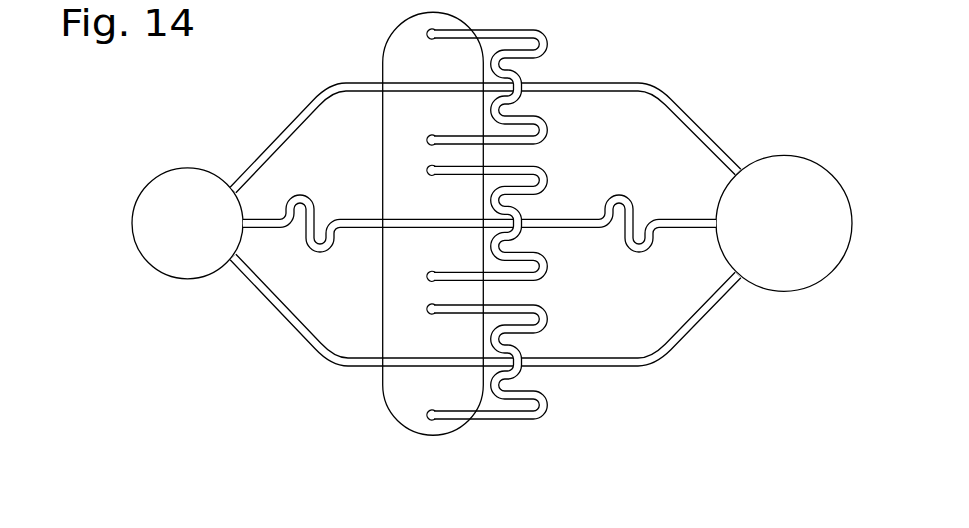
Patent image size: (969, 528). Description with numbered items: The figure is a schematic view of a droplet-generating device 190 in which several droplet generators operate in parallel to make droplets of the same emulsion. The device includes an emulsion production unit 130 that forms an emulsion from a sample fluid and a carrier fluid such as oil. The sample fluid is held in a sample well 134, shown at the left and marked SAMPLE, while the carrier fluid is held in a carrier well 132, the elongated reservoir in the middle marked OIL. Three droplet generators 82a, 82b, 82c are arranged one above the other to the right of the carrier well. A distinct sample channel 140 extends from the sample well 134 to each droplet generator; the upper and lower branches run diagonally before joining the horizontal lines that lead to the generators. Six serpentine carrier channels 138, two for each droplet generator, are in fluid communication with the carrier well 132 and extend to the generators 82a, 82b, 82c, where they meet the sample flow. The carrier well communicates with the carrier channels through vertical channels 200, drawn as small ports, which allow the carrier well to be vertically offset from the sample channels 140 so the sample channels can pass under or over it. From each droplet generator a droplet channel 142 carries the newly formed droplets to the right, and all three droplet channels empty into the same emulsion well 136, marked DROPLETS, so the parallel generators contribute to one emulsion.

The droplet-generating device 190 is at (122, 72).
The emulsion production unit 130 is at (202, 113).
The sample well 134 is at (197, 278).
The emulsion well 136 is at (805, 290).
The carrier well 132 is at (390, 288).
The sample channel 140 is at (264, 158).
The droplet channel 142 is at (624, 83).
The droplet generator 82a is at (534, 78).
The droplet generator 82b is at (534, 214).
The droplet generator 82c is at (534, 352).
The carrier channel 138 is at (498, 29).
The vertical channel 200 is at (430, 166).